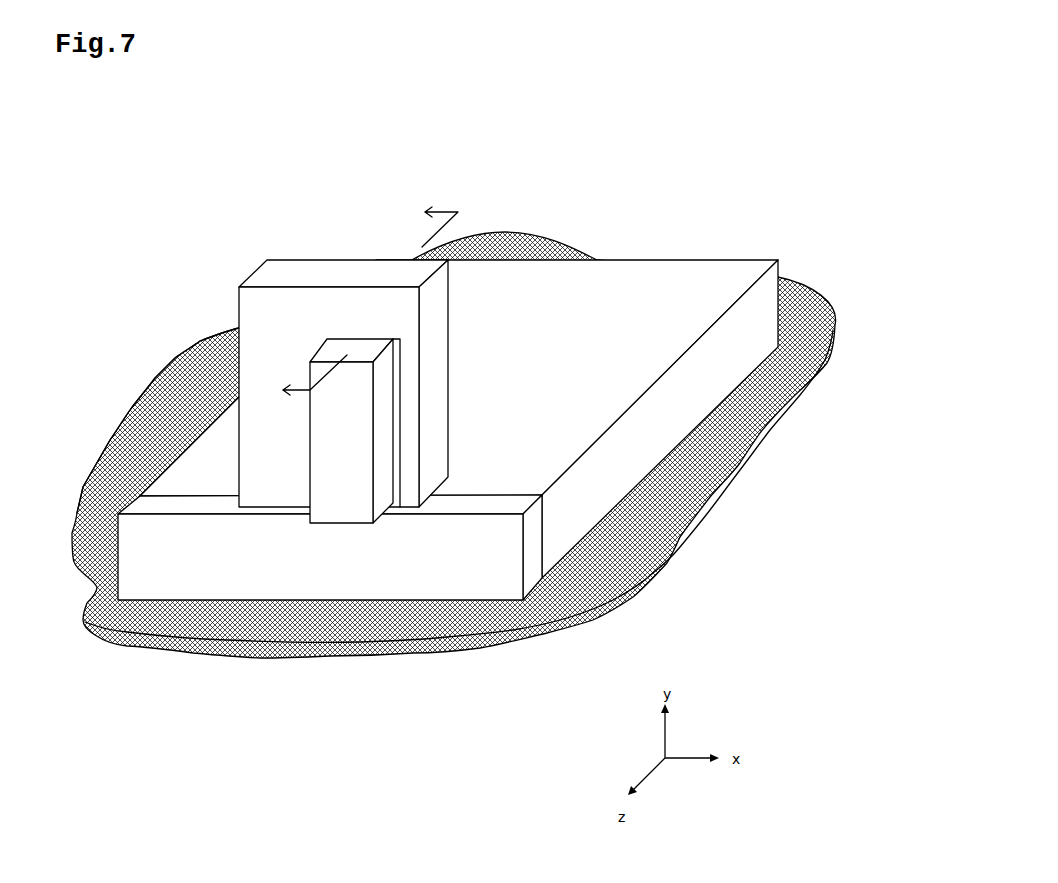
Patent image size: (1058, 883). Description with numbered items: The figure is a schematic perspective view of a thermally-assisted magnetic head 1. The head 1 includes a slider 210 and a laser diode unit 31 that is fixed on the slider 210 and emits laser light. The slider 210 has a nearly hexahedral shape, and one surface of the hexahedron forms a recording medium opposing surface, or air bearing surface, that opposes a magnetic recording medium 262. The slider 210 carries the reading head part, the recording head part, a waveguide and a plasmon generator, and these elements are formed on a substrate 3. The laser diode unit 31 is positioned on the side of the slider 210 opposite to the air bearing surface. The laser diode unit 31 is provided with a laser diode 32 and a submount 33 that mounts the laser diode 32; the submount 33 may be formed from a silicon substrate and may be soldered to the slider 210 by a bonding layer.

The thermally-assisted magnetic head 1 is at (429, 399).
The substrate 3 is at (429, 445).
The laser diode unit 31 is at (343, 349).
The laser diode 32 is at (345, 462).
The submount 33 is at (348, 268).
The slider 210 is at (653, 278).
The magnetic recording medium 262 is at (97, 492).